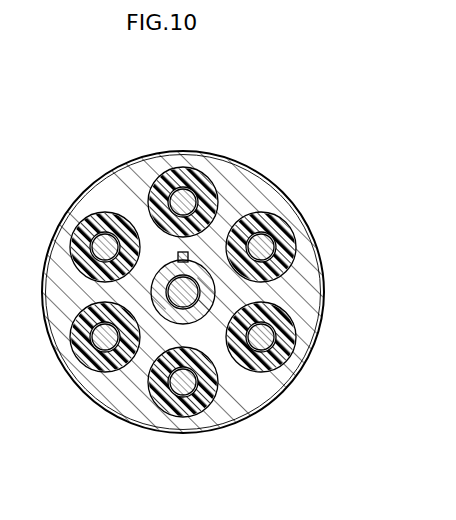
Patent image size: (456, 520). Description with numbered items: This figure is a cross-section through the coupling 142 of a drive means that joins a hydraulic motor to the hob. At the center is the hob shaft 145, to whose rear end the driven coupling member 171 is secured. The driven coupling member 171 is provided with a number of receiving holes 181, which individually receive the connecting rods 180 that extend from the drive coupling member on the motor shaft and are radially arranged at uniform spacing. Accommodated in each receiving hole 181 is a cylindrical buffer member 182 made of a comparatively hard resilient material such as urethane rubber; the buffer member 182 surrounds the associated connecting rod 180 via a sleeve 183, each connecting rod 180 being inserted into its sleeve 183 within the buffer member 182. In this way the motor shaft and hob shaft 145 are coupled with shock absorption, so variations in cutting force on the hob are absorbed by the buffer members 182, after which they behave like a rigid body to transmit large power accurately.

The coupling 142 is at (302, 183).
The driven coupling member 171 is at (232, 176).
The hob shaft 145 is at (152, 292).
The connecting rod 180 is at (183, 188).
The receiving hole 181 is at (82, 226).
The buffer member 182 is at (92, 240).
The sleeve 183 is at (165, 186).